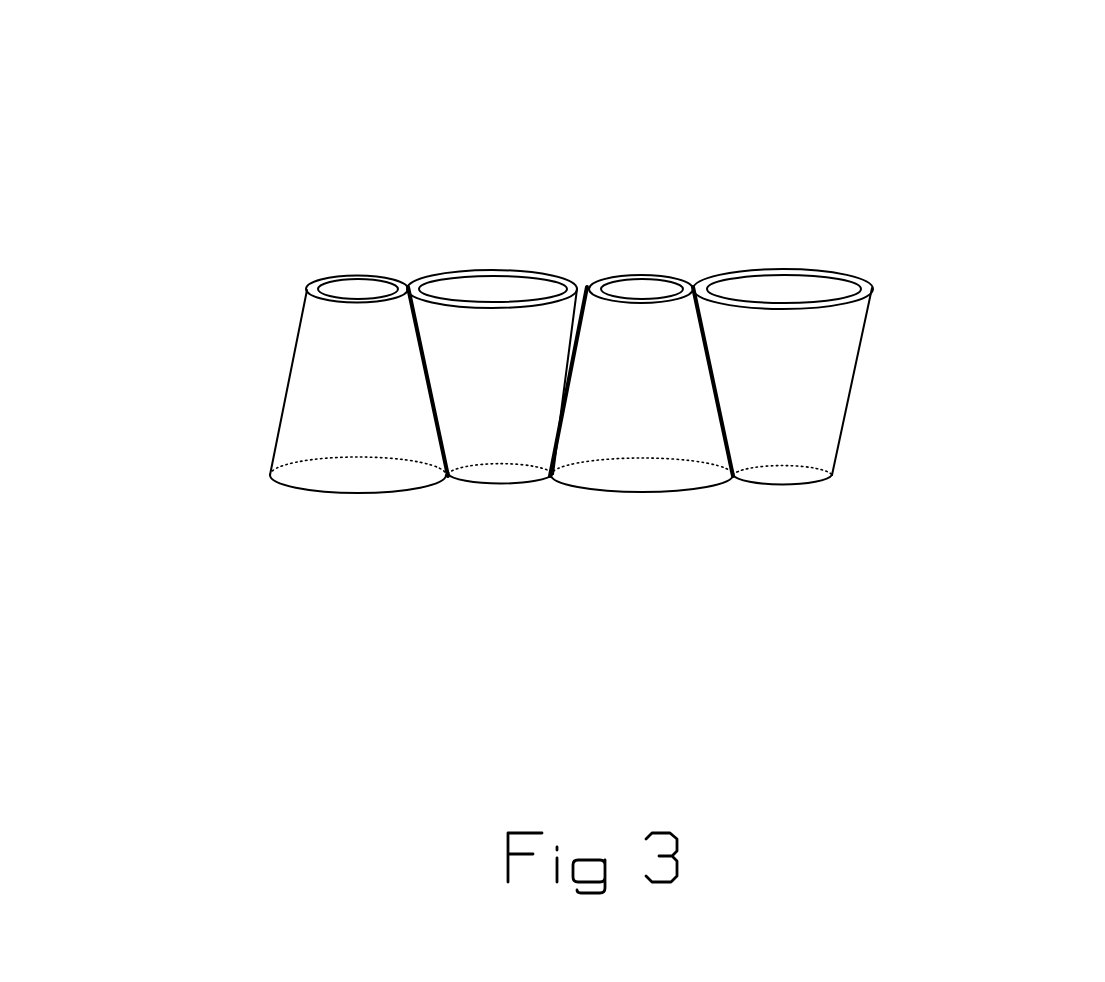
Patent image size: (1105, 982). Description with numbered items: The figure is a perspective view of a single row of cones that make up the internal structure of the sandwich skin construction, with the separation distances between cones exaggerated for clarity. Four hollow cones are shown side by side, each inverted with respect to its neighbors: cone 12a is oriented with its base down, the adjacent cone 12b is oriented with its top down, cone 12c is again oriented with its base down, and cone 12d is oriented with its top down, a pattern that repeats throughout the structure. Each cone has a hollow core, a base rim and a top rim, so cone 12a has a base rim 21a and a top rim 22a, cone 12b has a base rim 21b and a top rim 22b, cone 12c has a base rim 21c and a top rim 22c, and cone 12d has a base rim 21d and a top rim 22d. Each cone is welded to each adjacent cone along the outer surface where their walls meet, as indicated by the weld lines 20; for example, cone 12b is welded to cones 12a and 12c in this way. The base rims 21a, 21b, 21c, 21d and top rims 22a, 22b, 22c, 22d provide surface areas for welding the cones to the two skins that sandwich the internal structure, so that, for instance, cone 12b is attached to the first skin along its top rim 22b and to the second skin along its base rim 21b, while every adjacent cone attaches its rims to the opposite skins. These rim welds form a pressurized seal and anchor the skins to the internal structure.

The cone 12a is at (372, 408).
The cone 12b is at (536, 398).
The cone 12c is at (665, 400).
The cone 12d is at (820, 372).
The base rim 21a is at (277, 480).
The base rim 21b is at (497, 271).
The base rim 21c is at (556, 478).
The base rim 21d is at (872, 287).
The top rim 22a is at (318, 278).
The top rim 22b is at (452, 479).
The top rim 22c is at (662, 276).
The top rim 22d is at (833, 477).
The weld lines 20 is at (407, 272).